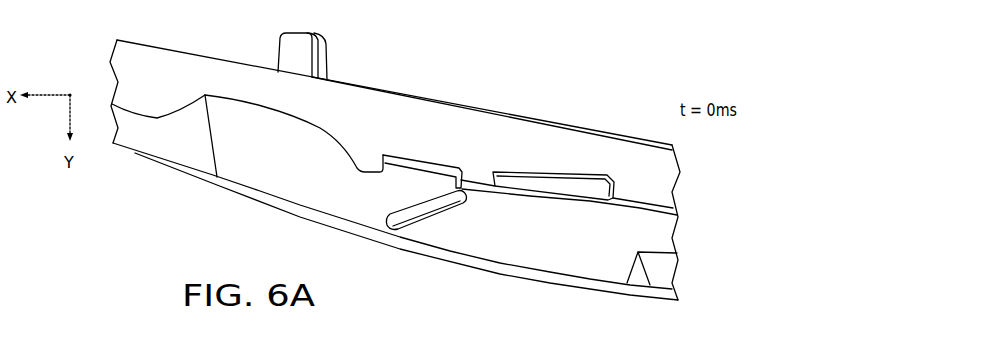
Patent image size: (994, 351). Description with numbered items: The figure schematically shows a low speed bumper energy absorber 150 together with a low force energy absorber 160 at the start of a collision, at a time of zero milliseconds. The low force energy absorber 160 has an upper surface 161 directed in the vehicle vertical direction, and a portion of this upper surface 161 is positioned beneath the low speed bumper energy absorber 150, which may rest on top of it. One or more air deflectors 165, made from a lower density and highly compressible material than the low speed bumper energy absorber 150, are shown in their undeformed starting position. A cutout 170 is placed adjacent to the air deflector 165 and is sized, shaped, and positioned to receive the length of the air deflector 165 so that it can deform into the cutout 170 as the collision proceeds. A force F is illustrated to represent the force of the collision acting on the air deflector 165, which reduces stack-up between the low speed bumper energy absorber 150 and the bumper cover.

The low speed bumper energy absorber 150 is at (555, 101).
The low force energy absorber 160 is at (483, 270).
The upper surface 161 is at (515, 238).
The air deflector 165 is at (383, 244).
The cutout 170 is at (411, 165).
The force F is at (434, 261).